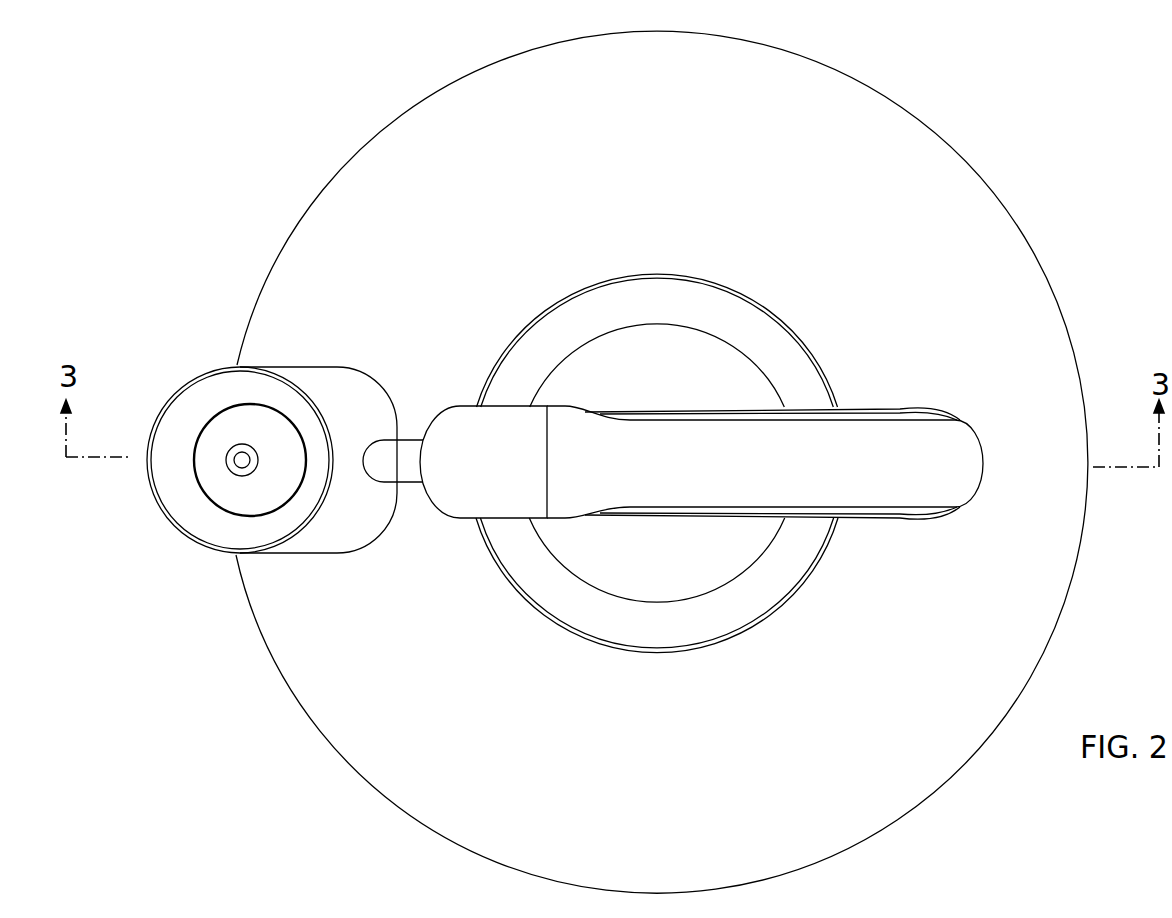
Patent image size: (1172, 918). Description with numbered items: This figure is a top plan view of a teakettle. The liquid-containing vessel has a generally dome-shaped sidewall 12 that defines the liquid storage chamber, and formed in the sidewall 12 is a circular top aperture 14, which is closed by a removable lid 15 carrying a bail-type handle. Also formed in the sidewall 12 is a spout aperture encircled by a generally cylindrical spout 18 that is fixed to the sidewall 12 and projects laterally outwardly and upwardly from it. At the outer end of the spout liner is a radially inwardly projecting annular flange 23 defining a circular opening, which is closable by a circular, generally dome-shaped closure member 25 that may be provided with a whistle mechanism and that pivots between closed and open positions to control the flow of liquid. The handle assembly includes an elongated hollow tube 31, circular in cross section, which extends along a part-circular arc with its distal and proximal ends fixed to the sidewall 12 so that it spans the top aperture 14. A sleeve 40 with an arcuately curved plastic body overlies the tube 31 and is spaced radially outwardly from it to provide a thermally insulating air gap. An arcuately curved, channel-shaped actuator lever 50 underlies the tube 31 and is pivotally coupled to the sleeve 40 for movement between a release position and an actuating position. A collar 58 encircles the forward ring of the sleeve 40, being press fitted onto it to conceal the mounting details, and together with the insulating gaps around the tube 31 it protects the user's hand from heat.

The sidewall 12 is at (975, 197).
The top aperture 14 is at (656, 506).
The lid 15 is at (767, 326).
The spout 18 is at (345, 367).
The annular flange 23 is at (170, 433).
The closure member 25 is at (230, 417).
The tube 31 is at (403, 437).
The sleeve 40 is at (867, 494).
The actuator lever 50 is at (868, 410).
The collar 58 is at (463, 507).